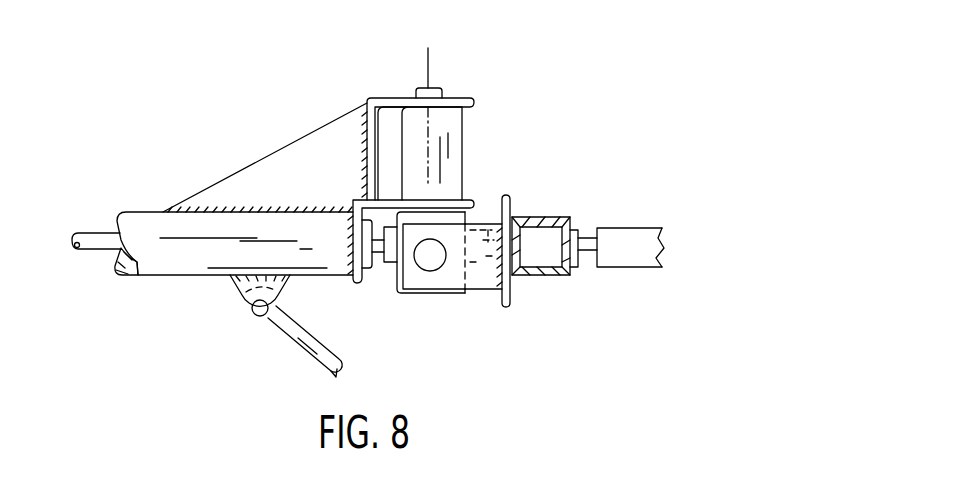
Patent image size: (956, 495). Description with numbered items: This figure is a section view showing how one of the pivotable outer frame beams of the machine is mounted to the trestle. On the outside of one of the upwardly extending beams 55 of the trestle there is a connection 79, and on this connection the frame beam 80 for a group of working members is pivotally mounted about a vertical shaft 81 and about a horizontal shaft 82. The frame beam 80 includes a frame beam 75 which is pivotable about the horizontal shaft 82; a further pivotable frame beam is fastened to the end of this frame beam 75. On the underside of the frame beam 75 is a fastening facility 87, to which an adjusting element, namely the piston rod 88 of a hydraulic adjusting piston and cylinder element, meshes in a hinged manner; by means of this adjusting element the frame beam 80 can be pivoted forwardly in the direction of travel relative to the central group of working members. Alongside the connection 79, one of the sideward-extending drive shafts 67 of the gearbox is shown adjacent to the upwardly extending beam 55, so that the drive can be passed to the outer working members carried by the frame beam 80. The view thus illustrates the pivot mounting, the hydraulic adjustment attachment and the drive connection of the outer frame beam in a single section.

The upwardly extending beam 55 is at (555, 215).
The drive shaft 67 is at (590, 248).
The frame beam 75 is at (143, 221).
The connection 79 is at (475, 172).
The frame beam 80 is at (158, 282).
The vertical shaft 81 is at (430, 259).
The horizontal shaft 82 is at (416, 91).
The fastening facility 87 is at (233, 288).
The piston rod 88 is at (312, 356).